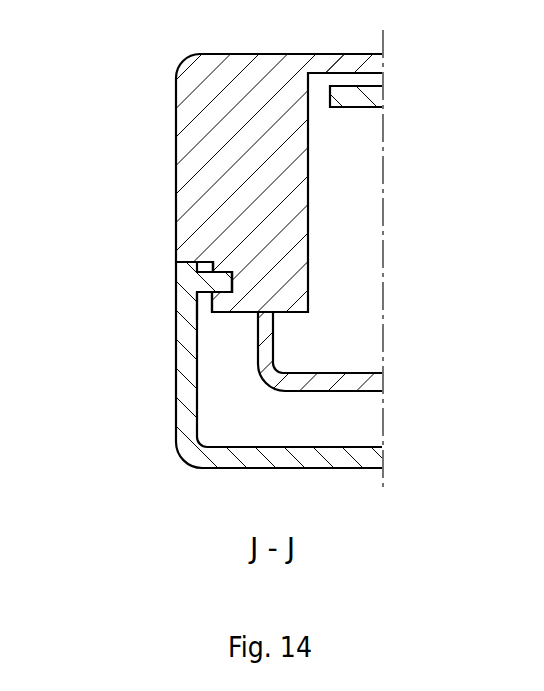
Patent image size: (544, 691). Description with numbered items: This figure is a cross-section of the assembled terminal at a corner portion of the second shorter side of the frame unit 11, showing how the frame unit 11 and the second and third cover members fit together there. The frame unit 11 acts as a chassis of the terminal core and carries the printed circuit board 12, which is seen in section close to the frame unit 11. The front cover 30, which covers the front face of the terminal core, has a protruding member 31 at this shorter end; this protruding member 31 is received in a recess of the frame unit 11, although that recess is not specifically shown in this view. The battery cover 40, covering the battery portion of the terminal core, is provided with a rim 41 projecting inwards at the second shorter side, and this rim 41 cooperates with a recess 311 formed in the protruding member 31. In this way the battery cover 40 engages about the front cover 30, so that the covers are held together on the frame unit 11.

The front cover 30 is at (348, 63).
The protruding member 31 is at (202, 123).
The recess 311 is at (233, 285).
The printed circuit board 12 is at (350, 98).
The frame unit 11 is at (328, 382).
The battery cover 40 is at (347, 469).
The rim 41 is at (207, 282).